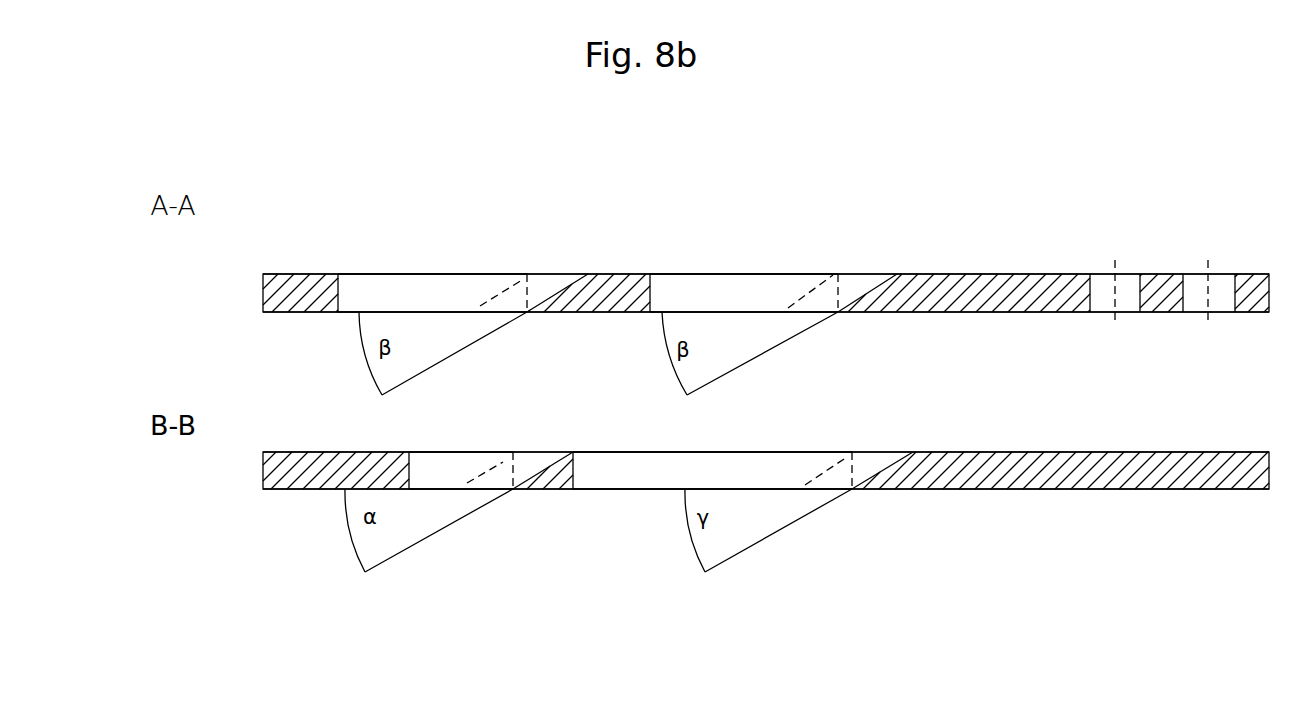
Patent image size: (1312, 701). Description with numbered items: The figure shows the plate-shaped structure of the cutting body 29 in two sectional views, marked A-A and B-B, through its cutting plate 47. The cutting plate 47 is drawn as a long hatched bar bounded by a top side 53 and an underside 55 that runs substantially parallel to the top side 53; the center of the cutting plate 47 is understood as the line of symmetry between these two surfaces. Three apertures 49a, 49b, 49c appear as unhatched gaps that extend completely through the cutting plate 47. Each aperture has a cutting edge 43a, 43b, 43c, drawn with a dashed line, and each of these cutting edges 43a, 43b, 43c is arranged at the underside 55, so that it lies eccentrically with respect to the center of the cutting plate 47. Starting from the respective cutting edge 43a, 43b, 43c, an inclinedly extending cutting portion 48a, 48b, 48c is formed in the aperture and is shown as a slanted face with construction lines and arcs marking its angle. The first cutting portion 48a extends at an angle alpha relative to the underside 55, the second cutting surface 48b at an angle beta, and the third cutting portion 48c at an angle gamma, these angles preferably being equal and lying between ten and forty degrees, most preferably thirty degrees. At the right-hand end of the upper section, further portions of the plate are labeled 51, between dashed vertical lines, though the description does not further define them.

The cutting body 29 is at (248, 162).
The cutting plate 47 is at (275, 288).
The top side 53 is at (318, 266).
The underside 55 is at (298, 316).
The aperture 49a is at (445, 462).
The aperture 49b is at (407, 250).
The aperture 49c is at (670, 462).
The cutting edge 43a is at (497, 483).
The cutting edge 43b is at (506, 300).
The cutting edge 43c is at (832, 483).
The first cutting portion 48a is at (545, 465).
The second cutting surface 48b is at (560, 290).
The third cutting portion 48c is at (885, 465).
The web / bridge sections 51 is at (1195, 290).